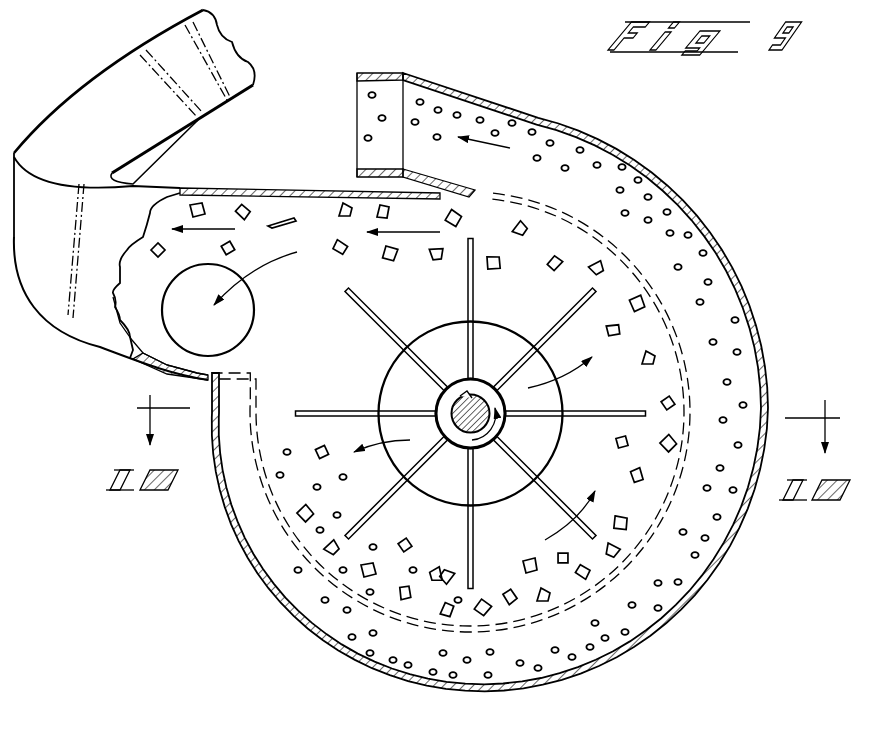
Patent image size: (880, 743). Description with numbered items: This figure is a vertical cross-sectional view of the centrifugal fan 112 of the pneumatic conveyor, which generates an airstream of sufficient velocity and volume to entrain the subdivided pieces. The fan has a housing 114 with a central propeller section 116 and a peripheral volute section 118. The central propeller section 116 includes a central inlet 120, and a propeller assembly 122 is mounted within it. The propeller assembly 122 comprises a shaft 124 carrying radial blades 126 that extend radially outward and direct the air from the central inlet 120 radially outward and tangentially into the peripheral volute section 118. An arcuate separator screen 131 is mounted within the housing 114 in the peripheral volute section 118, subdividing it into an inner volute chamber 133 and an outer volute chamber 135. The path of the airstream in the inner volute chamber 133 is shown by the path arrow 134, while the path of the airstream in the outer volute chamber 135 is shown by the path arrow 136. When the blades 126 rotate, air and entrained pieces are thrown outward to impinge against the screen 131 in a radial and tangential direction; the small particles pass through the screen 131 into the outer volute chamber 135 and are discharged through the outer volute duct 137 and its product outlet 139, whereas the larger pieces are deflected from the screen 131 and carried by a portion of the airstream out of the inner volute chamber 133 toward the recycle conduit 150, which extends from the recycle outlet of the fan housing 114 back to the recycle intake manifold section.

The centrifugal fan 112 is at (530, 402).
The housing 114 is at (683, 607).
The central propeller section 116 is at (291, 488).
The peripheral volute section 118 is at (741, 367).
The central inlet 120 is at (488, 348).
The propeller assembly 122 is at (562, 397).
The shaft 124 is at (452, 405).
The radial blades 126 is at (367, 317).
The separator screen 131 is at (290, 557).
The inner volute chamber 133 is at (577, 253).
The path arrow 134 is at (432, 234).
The outer volute chamber 135 is at (722, 302).
The path arrow 136 is at (510, 148).
The outer volute duct 137 is at (385, 73).
The product outlet 139 is at (357, 112).
The recycle conduit 150 is at (173, 55).